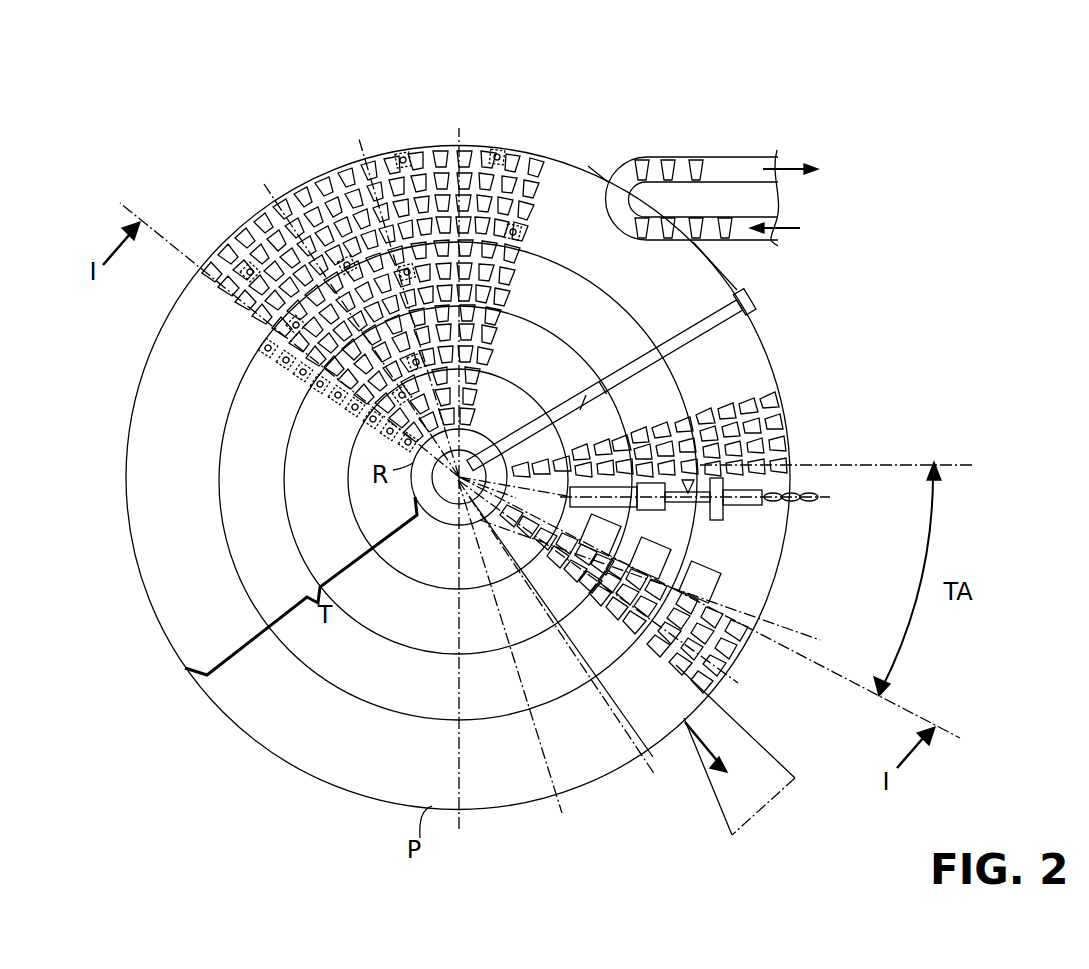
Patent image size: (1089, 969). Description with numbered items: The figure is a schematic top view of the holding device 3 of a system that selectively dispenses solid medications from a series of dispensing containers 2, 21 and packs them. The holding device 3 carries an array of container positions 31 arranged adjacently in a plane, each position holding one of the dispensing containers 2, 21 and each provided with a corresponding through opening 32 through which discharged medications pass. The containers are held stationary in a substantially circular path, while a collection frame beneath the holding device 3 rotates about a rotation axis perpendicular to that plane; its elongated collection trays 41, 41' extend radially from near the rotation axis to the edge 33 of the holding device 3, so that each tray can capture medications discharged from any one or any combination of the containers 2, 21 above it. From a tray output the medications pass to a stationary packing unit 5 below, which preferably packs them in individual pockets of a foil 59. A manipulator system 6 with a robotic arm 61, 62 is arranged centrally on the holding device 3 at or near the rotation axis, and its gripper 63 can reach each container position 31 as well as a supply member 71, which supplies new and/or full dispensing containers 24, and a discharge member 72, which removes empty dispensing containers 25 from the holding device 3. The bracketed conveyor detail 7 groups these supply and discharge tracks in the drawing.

The dispensing container 2 is at (530, 156).
The holding device 3 is at (777, 373).
The packing unit 5 is at (806, 488).
The manipulator system 6 is at (445, 500).
The conveyor loop 7 is at (744, 195).
The dispensing container 21 is at (592, 572).
The new and/or full dispensing container 24 is at (696, 238).
The empty dispensing container 25 is at (668, 160).
The container position 31 is at (300, 372).
The through opening 32 is at (353, 412).
The edge 33 is at (783, 554).
The collection tray 41 is at (632, 665).
The collection tray 41' is at (752, 831).
The foil 59 is at (820, 497).
The robotic arm 61 is at (582, 401).
The robotic arm 62 is at (714, 321).
The gripper 63 is at (758, 301).
The supply member 71 is at (745, 238).
The discharge member 72 is at (738, 160).